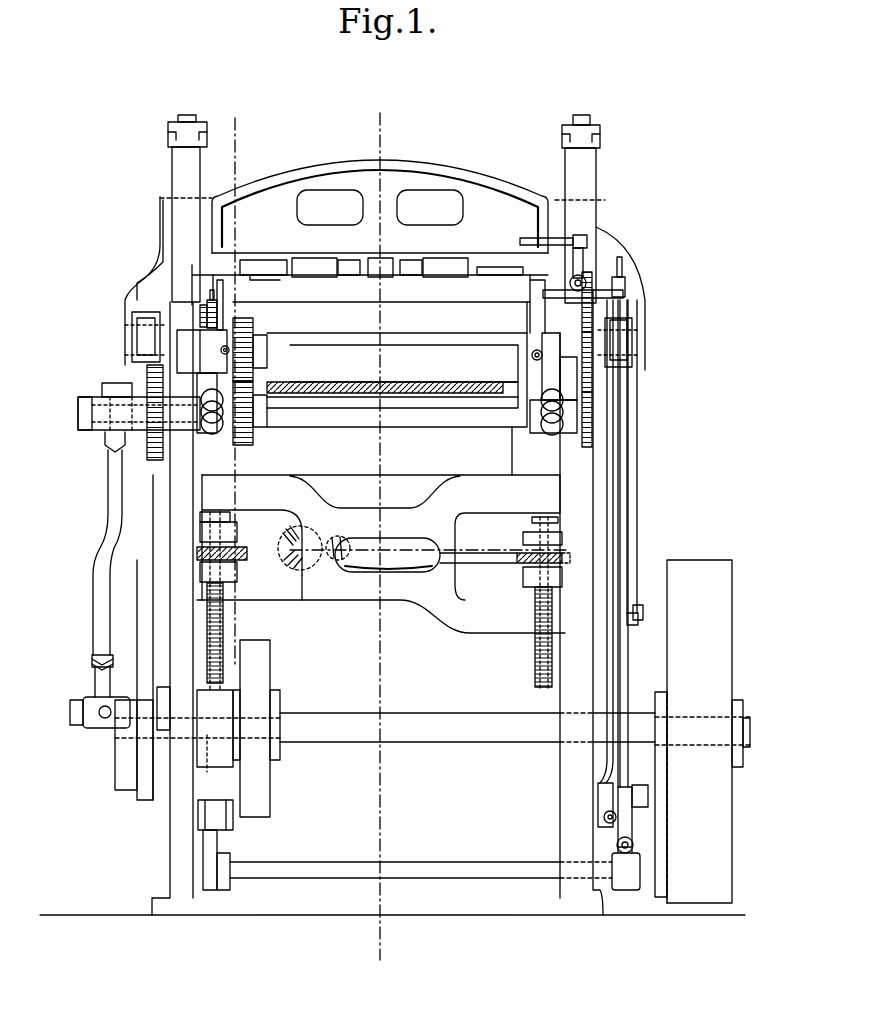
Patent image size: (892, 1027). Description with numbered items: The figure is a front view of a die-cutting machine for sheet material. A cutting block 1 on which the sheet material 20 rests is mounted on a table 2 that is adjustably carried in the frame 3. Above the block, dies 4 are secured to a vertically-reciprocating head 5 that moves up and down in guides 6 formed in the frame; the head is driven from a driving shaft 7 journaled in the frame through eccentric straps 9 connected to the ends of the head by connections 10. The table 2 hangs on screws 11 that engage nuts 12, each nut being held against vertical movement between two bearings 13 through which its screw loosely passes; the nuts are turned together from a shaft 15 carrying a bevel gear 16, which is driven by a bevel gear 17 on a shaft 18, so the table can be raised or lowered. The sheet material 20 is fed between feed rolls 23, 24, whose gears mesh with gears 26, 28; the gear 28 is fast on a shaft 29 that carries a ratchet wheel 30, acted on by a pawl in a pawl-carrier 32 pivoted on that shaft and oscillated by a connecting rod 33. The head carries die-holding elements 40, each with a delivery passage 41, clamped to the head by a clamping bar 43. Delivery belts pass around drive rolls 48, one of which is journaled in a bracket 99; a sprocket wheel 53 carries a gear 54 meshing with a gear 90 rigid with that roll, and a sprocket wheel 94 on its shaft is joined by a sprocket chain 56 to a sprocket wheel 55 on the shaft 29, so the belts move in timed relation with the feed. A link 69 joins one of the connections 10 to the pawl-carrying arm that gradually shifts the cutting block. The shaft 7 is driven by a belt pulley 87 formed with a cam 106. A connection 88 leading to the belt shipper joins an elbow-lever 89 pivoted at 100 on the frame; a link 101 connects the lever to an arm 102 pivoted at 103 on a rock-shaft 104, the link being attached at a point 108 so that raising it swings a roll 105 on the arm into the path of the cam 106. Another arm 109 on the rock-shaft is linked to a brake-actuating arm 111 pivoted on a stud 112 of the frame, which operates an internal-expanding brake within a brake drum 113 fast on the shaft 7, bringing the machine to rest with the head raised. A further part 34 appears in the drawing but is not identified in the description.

The cutting block 1 is at (387, 451).
The table 2 is at (360, 480).
The frame 3 is at (180, 468).
The dies 4 is at (375, 536).
The vertically-reciprocating head 5 is at (410, 145).
The guides 6 is at (176, 160).
The driving shaft 7 is at (441, 733).
The eccentric straps 9 is at (140, 791).
The connections 10 is at (143, 579).
The screws 11 is at (210, 643).
The nuts 12 is at (242, 553).
The bearings 13 is at (197, 568).
The shaft 15 is at (485, 560).
The bevel gear 16 is at (343, 603).
The bevel gear 17 is at (287, 570).
The shaft 18 is at (295, 612).
The sheet material 20 is at (470, 382).
The feed roll 23 is at (448, 375).
The feed roll 24 is at (478, 405).
The gear 26 is at (254, 321).
The gear 28 is at (253, 441).
The shaft 29 is at (145, 377).
The ratchet wheel 30 is at (148, 390).
The pawl-carrier 32 is at (113, 388).
The connecting rod 33 is at (113, 493).
The coupling 34 is at (120, 683).
The die-holding elements 40 is at (304, 262).
The delivery passage 41 is at (369, 268).
The clamping bar 43 is at (257, 266).
The direction rolls 48 is at (493, 288).
The sprocket wheel 53 is at (213, 315).
The gear 54 is at (210, 303).
The sprocket wheel 55 is at (591, 434).
The sprocket chain 56 is at (586, 380).
The link 69 is at (634, 487).
The belt pulley 87 is at (728, 607).
The connection 88 is at (549, 242).
The elbow-lever 89 is at (580, 262).
The gear 90 is at (213, 280).
The sprocket wheel 94 is at (591, 280).
The bracket 99 is at (626, 301).
The pivot 100 is at (613, 288).
The link 101 is at (621, 450).
The arm 102 is at (633, 820).
The pivot 103 is at (626, 858).
The rock-shaft 104 is at (510, 873).
The roll 105 is at (648, 800).
The cam 106 is at (660, 872).
The pivotal connection point 108 is at (604, 815).
The arm 109 is at (213, 846).
The brake-actuating arm 111 is at (228, 782).
The stud 112 is at (208, 741).
The brake drum 113 is at (241, 770).